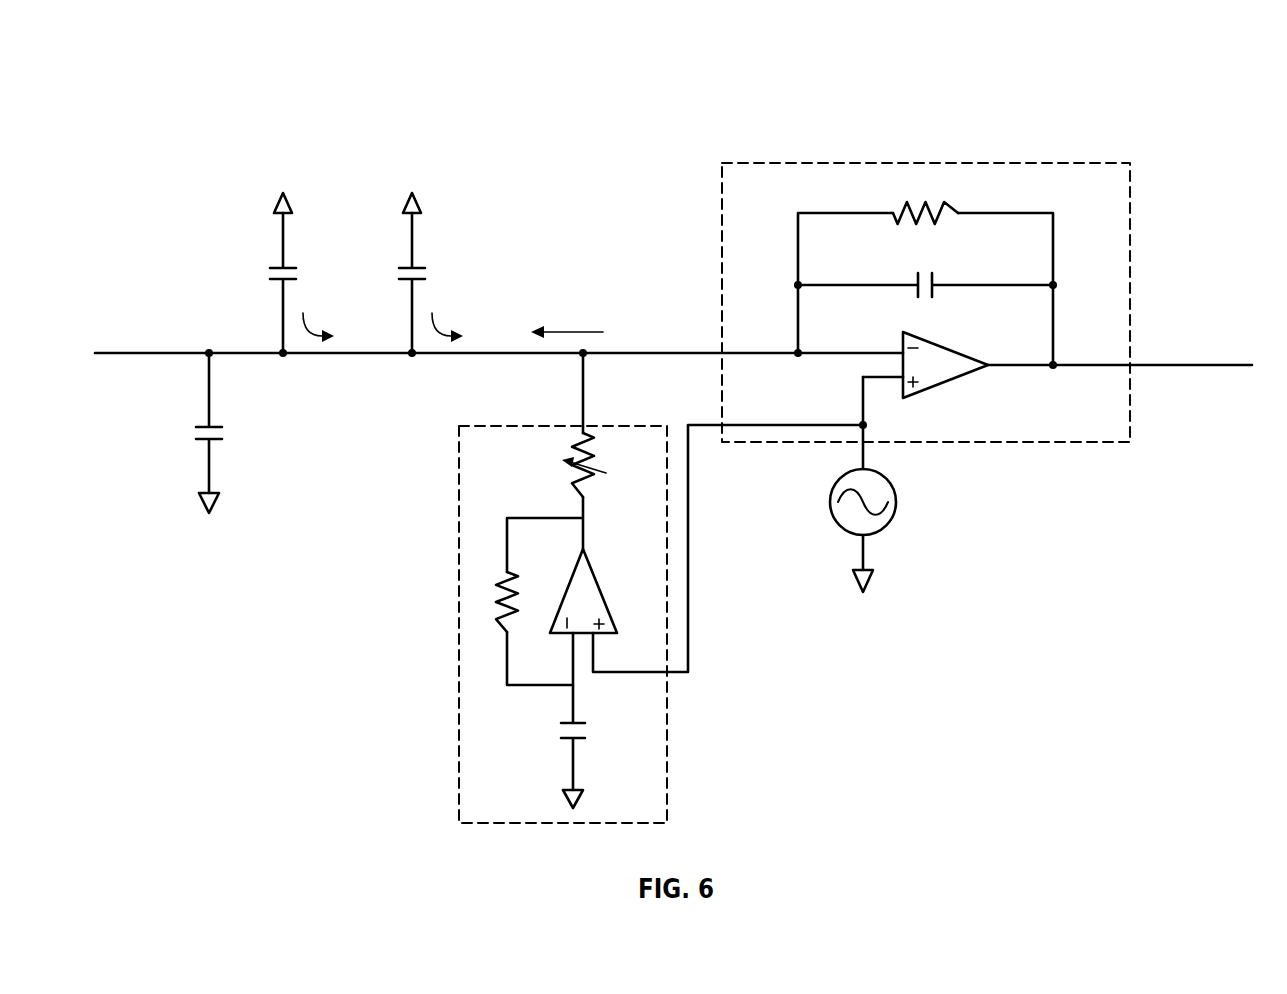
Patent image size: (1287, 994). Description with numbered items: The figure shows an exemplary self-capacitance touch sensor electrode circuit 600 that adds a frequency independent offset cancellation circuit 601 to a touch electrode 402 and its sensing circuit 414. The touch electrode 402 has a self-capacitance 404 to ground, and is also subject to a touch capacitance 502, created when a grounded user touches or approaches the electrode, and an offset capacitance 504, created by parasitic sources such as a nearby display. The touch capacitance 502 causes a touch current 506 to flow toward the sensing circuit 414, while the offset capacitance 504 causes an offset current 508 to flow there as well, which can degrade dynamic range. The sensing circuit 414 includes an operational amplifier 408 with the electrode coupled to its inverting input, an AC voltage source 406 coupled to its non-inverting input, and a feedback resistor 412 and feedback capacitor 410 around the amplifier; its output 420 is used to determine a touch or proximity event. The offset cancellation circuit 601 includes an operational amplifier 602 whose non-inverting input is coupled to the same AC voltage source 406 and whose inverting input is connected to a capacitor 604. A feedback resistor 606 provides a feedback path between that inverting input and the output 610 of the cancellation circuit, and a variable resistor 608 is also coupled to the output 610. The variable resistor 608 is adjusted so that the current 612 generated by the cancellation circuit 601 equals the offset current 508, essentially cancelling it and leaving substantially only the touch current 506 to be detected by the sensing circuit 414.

The self-capacitance touch sensor electrode circuit 600 is at (158, 101).
The touch electrode 402 is at (148, 352).
The self-capacitance 404 is at (200, 440).
The touch capacitance 502 is at (275, 268).
The offset capacitance 504 is at (404, 268).
The touch current 506 is at (309, 341).
The offset current 508 is at (437, 341).
The current generated by offset cancellation circuit 612 is at (590, 331).
The output of offset cancellation circuit 610 is at (585, 400).
The frequency independent offset cancellation circuit 601 is at (487, 823).
The variable resistor 608 is at (573, 485).
The feedback resistor 606 is at (493, 592).
The operational amplifier 602 is at (587, 552).
The capacitor 604 is at (565, 737).
The sensing circuit 414 is at (1085, 163).
The feedback resistor 412 is at (913, 203).
The feedback capacitor 410 is at (933, 290).
The operational amplifier 408 is at (945, 383).
The output 420 is at (1202, 365).
The AC voltage source 406 is at (842, 532).